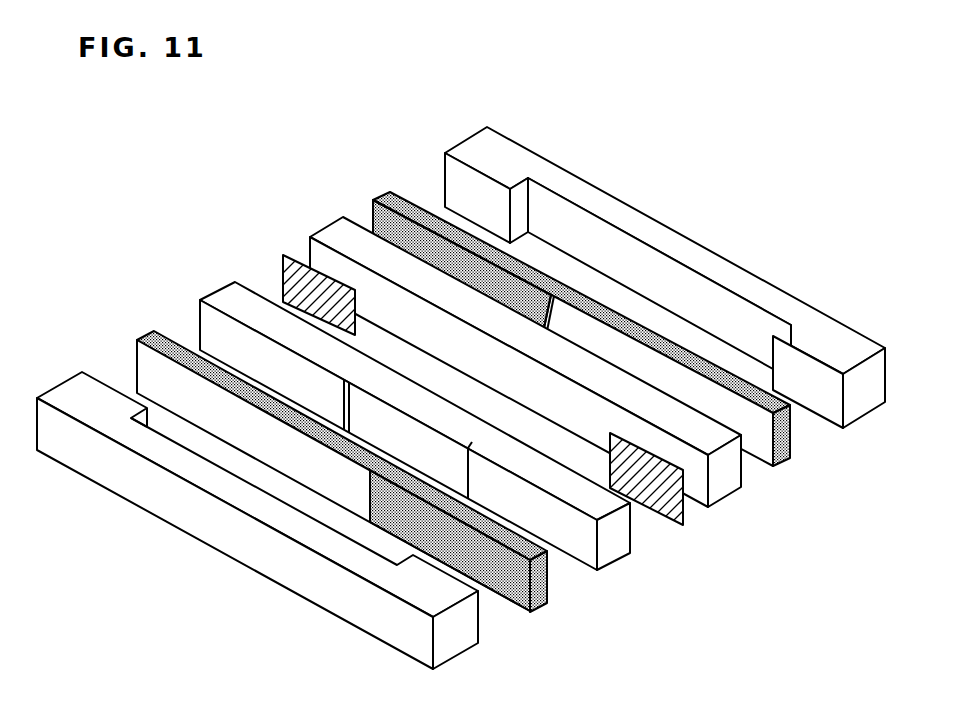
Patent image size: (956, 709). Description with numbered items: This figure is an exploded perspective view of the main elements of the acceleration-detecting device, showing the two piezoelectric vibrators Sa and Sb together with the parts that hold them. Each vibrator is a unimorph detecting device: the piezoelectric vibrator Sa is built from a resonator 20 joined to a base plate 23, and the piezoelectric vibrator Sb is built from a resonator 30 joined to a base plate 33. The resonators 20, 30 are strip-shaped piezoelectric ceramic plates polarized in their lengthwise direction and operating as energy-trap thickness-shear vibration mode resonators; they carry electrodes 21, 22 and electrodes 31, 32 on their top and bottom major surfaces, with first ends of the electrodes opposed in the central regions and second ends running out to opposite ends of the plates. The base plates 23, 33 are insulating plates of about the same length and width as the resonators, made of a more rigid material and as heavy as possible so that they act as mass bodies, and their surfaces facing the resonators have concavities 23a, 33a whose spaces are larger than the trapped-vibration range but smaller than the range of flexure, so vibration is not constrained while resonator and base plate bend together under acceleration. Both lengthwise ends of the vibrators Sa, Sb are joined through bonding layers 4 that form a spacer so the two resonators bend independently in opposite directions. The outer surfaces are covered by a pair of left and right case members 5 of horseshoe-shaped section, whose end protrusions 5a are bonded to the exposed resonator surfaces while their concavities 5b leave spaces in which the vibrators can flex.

The bonding layer 4 is at (283, 260).
The case member 5 is at (627, 300).
The protrusion 5a is at (443, 176).
The concavity 5b is at (661, 275).
The resonator 20 is at (549, 293).
The electrode 21 is at (655, 372).
The electrode 22 is at (520, 262).
The base plate 23 is at (313, 223).
The concavity 23a is at (557, 288).
The resonator 30 is at (320, 467).
The electrode 31 is at (212, 417).
The electrode 32 is at (464, 569).
The base plate 33 is at (396, 432).
The concavity 33a is at (440, 463).
The piezoelectric vibrator Sa is at (533, 330).
The piezoelectric vibrator Sb is at (361, 447).